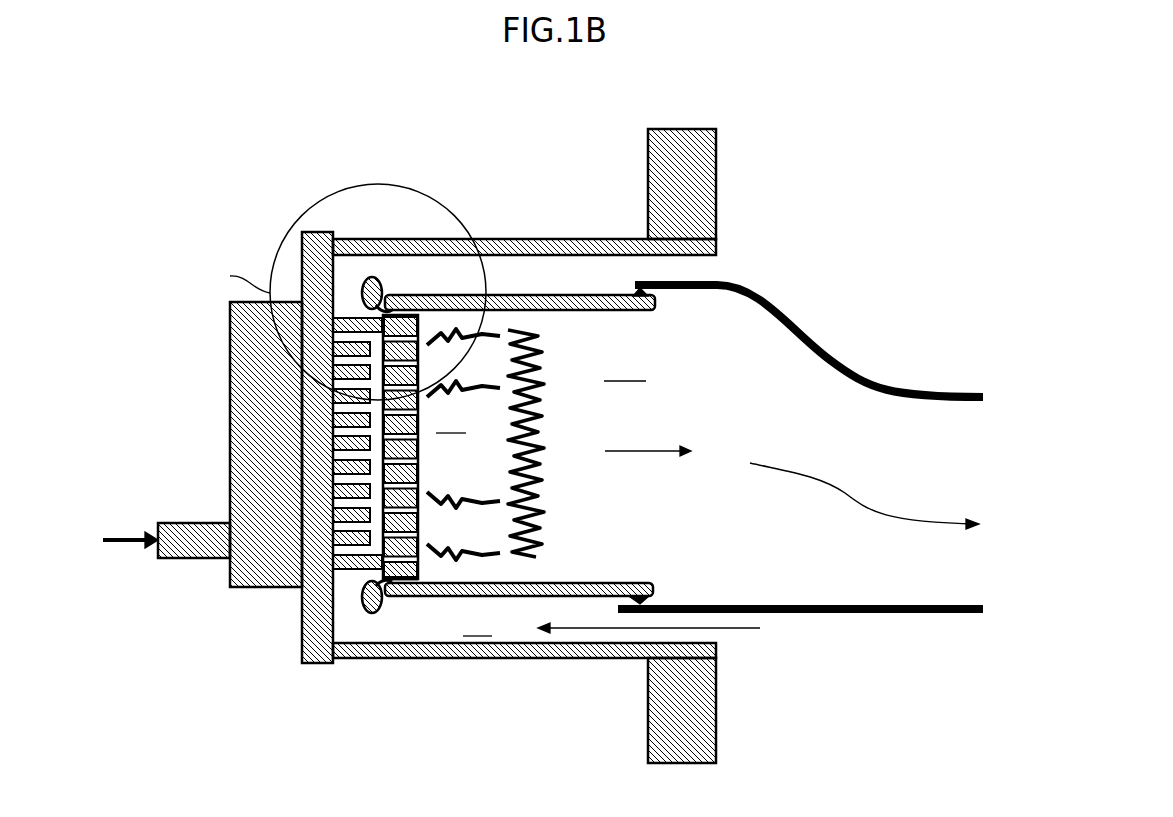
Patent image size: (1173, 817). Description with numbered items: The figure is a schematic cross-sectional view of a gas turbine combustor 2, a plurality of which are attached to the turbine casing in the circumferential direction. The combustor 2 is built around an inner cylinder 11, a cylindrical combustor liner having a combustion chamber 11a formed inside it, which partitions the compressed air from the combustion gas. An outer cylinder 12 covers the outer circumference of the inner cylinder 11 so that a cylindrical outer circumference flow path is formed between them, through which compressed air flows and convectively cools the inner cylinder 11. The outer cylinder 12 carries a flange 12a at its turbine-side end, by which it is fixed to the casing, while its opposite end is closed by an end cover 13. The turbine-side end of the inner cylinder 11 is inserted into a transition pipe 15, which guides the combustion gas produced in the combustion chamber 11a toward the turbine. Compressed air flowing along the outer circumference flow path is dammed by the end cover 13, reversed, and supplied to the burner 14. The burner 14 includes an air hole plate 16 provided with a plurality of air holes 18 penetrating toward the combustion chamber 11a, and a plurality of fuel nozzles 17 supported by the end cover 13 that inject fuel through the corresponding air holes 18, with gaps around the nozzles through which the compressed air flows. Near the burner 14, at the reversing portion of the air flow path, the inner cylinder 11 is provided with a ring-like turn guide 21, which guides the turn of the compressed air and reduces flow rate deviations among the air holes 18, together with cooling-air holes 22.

The combustor 2 is at (152, 357).
The inner cylinder 11 is at (518, 297).
The combustion chamber 11a is at (647, 404).
The outer cylinder 12 is at (528, 660).
The flange 12a is at (648, 190).
The end cover 13 is at (318, 665).
The burner 14 is at (437, 518).
The transition pipe 15 is at (834, 341).
The air hole plate 16 is at (398, 580).
The fuel nozzles 17 is at (335, 443).
The air holes 18 is at (418, 440).
The turn guide 21 is at (368, 277).
The cooling-air holes 22 is at (386, 297).